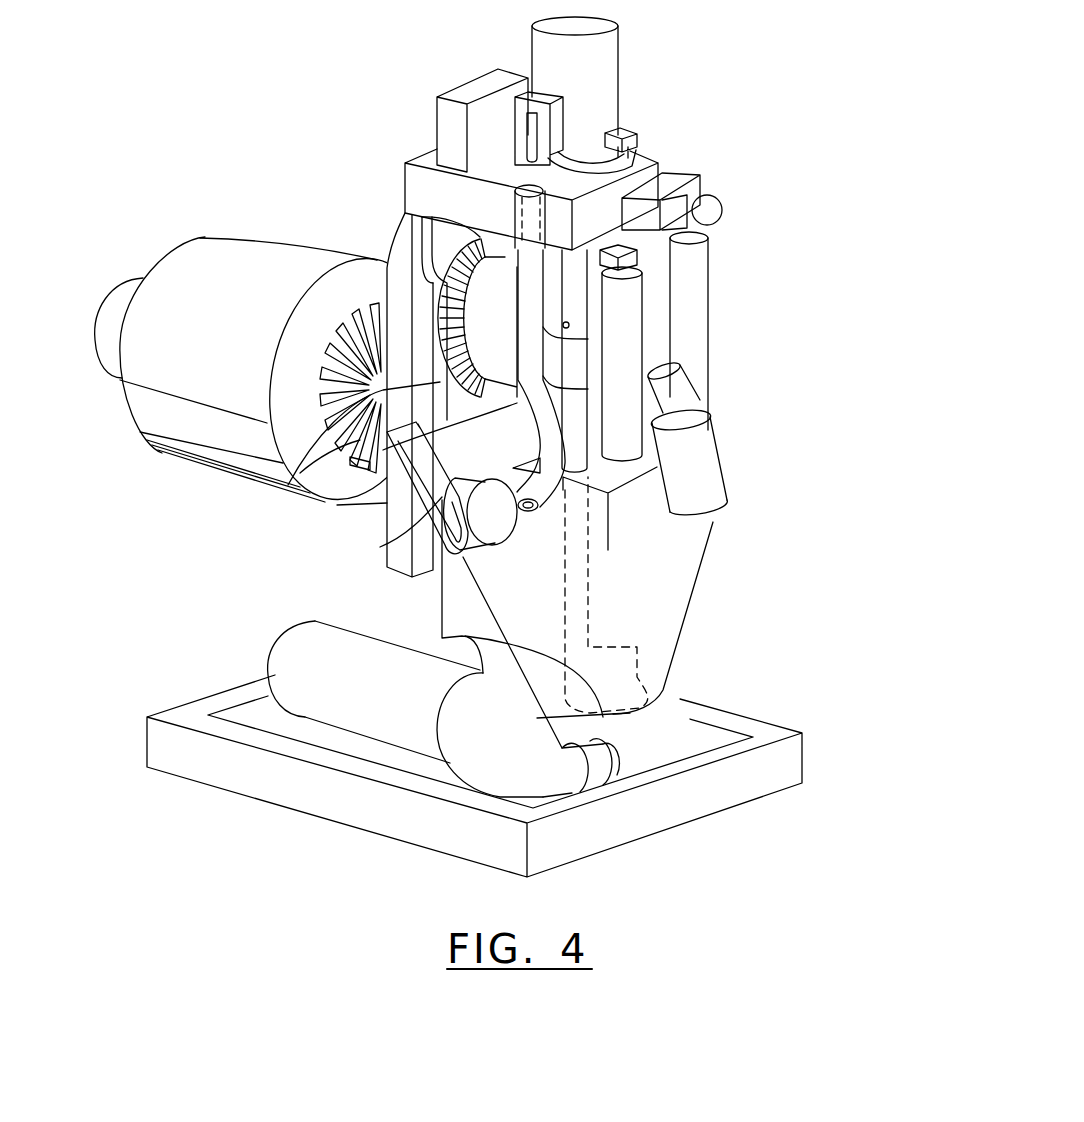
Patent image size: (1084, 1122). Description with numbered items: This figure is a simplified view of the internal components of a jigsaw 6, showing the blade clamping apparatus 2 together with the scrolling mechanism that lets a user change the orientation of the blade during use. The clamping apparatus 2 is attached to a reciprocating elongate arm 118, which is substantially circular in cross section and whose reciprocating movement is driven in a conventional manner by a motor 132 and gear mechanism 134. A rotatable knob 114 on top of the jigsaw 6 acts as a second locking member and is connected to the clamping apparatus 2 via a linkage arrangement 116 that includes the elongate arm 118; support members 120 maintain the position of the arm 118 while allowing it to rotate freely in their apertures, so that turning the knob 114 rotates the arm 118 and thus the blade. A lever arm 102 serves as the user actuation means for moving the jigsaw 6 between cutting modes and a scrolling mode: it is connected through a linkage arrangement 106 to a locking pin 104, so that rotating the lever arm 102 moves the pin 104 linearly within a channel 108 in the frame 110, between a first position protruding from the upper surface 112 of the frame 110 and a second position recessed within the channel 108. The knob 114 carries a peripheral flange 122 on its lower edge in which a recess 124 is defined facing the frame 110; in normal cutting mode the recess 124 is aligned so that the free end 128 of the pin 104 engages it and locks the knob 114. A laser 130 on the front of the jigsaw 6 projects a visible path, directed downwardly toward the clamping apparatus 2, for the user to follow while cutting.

The clamping apparatus 2 is at (623, 682).
The jigsaw 6 is at (745, 524).
The lever arm 102 is at (415, 490).
The locking pin 104 is at (533, 290).
The linkage arrangement 106 is at (443, 591).
The channel 108 is at (532, 188).
The frame 110 is at (410, 158).
The upper surface 112 is at (437, 158).
The rotatable knob 114 is at (598, 62).
The linkage arrangement 116 is at (570, 367).
The elongate reciprocating arm 118 is at (577, 310).
The support members 120 is at (284, 478).
The peripheral flange 122 is at (583, 157).
The recess 124 is at (528, 143).
The free end 128 is at (640, 162).
The laser 130 is at (712, 213).
The motor 132 is at (223, 273).
The gear mechanism 134 is at (467, 253).